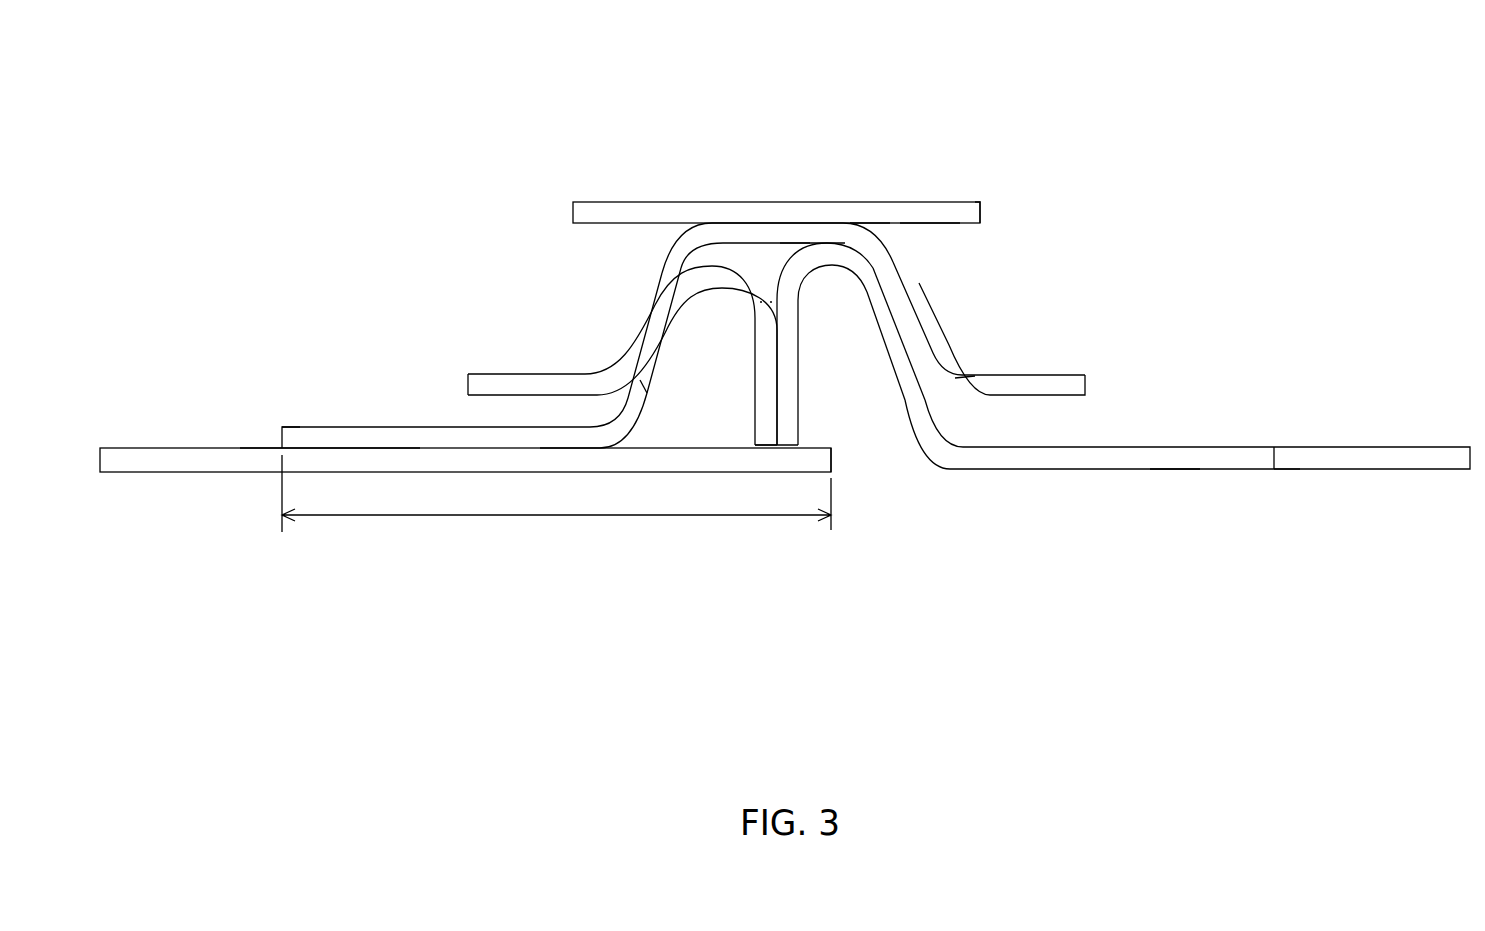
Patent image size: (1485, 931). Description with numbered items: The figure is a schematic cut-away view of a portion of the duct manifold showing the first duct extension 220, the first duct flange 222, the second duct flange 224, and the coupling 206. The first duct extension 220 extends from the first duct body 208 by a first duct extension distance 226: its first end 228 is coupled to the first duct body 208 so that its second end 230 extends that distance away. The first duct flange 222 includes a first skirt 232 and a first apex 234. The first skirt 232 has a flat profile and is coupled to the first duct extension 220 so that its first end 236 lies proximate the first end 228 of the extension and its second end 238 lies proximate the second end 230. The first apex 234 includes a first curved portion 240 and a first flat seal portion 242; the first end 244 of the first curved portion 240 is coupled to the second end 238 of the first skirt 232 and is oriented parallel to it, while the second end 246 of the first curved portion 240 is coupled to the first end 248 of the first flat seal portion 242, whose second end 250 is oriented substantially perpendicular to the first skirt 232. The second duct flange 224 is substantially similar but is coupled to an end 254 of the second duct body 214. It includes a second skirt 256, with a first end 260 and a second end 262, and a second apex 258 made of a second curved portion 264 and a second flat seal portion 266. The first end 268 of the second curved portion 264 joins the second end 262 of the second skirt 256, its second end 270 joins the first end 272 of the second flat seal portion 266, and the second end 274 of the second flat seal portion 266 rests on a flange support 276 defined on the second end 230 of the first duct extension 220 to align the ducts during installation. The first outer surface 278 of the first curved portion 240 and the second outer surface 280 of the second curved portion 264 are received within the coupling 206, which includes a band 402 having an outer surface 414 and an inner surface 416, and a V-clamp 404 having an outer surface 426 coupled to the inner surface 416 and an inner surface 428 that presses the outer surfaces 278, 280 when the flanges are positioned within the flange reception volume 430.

The coupling 206 is at (615, 212).
The first duct body 208 is at (183, 460).
The second duct body 214 is at (1283, 452).
The first duct extension 220 is at (573, 301).
The first duct flange 222 is at (363, 433).
The second duct flange 224 is at (1065, 453).
The first duct extension distance 226 is at (445, 517).
The first end of first duct extension 228 is at (265, 460).
The second end of first duct extension 230 is at (838, 458).
The first skirt 232 is at (420, 433).
The first apex 234 is at (652, 350).
The first end of first skirt 236 is at (290, 427).
The second end of first skirt 238 is at (622, 296).
The first curved portion 240 is at (657, 387).
The first flat seal portion 242 is at (752, 355).
The first end of first curved portion 244 is at (587, 440).
The second end of first curved portion 246 is at (760, 302).
The first end of first flat seal portion 248 is at (770, 302).
The second end of first flat seal portion 250 is at (894, 364).
The end of second duct body 254 is at (1278, 468).
The second skirt 256 is at (1177, 468).
The second apex 258 is at (887, 322).
The first end of second skirt 260 is at (1272, 460).
The second end of second skirt 262 is at (966, 378).
The second curved portion 264 is at (872, 288).
The second flat seal portion 266 is at (790, 330).
The first end of second curved portion 268 is at (953, 455).
The second end of second curved portion 270 is at (792, 303).
The first end of second flat seal portion 272 is at (785, 295).
The second end of second flat seal portion 274 is at (788, 450).
The flange support 276 is at (818, 445).
The first outer surface 278 is at (667, 290).
The second outer surface 280 is at (877, 273).
The band 402 is at (976, 203).
The V-clamp 404 is at (980, 329).
The outer surface of band 414 is at (868, 212).
The inner surface of band 416 is at (933, 224).
The outer surface of V-clamp 426 is at (1002, 380).
The inner surface of V-clamp 428 is at (907, 350).
The flange reception volume 430 is at (718, 365).